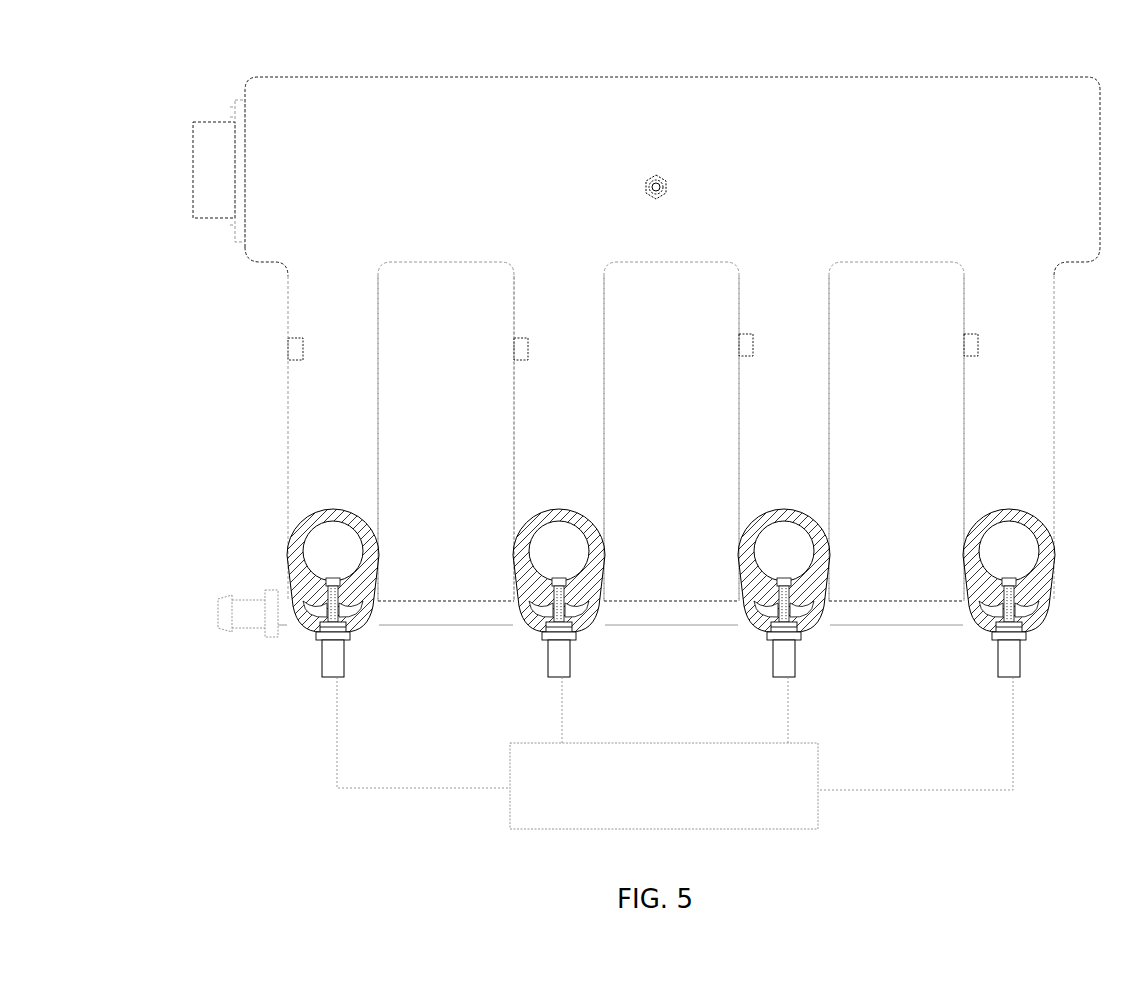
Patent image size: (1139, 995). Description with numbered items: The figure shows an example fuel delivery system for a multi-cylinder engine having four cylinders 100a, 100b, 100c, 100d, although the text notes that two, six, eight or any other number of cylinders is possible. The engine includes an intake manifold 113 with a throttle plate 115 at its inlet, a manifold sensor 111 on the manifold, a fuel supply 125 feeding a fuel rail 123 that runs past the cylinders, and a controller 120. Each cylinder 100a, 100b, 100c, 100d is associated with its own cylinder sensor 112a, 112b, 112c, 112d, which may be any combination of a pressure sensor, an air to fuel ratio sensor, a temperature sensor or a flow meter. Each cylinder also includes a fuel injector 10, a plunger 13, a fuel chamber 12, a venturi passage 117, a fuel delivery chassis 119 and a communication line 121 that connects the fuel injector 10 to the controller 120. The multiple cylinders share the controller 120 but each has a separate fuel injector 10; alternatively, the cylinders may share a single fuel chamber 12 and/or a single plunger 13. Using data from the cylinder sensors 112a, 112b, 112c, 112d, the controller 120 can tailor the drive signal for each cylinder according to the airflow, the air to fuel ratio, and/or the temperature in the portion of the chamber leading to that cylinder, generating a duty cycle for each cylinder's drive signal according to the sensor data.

The intake manifold 113 is at (517, 75).
The throttle plate 115 is at (210, 122).
The manifold sensor 111 is at (664, 178).
The cylinder sensor 112a is at (304, 350).
The cylinder sensor 112b is at (530, 350).
The cylinder sensor 112c is at (755, 346).
The cylinder sensor 112d is at (978, 346).
The cylinder 100a is at (250, 465).
The cylinder 100b is at (475, 467).
The cylinder 100c is at (710, 466).
The cylinder 100d is at (935, 466).
The venturi passage 117 is at (296, 548).
The fuel delivery chassis 119 is at (296, 592).
The plunger 13 is at (325, 605).
The fuel chamber 12 is at (317, 613).
The fuel injector 10 is at (346, 664).
The communication line 121 is at (337, 713).
The controller 120 is at (664, 786).
The fuel rail 123 is at (433, 627).
The fuel supply 125 is at (215, 626).